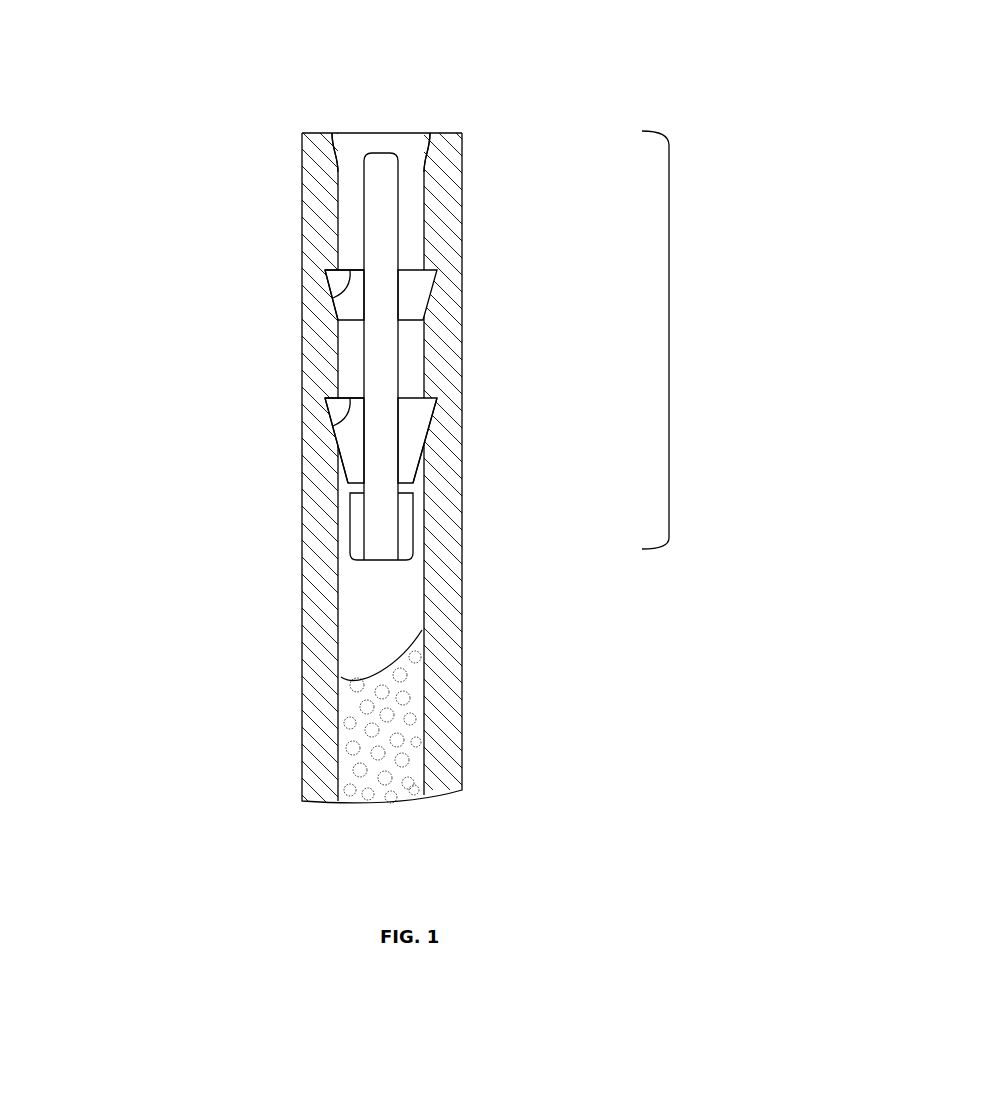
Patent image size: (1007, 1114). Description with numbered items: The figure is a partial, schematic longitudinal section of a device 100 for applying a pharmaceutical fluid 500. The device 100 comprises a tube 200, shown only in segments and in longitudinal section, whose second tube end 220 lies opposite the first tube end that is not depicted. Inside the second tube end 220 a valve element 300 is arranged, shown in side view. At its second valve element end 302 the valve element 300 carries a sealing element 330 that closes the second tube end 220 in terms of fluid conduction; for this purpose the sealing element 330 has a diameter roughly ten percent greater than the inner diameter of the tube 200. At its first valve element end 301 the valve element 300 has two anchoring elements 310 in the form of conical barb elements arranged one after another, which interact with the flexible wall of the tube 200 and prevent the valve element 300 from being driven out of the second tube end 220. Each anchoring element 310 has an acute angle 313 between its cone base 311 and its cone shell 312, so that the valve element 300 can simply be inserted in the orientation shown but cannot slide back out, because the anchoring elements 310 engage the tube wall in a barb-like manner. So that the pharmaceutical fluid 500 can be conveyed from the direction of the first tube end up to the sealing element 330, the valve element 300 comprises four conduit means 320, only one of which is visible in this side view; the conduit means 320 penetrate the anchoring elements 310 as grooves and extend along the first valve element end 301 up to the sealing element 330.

The device 100 is at (533, 122).
The tube 200 is at (302, 582).
The second tube end 220 is at (257, 173).
The valve element 300 is at (669, 342).
The first valve element end 301 is at (410, 478).
The second valve element end 302 is at (417, 180).
The anchoring elements 310 is at (418, 440).
The cone base 311 is at (356, 395).
The cone shell 312 is at (348, 483).
The acute angle 313 is at (335, 411).
The conduit means 320 is at (383, 520).
The sealing element 330 is at (402, 146).
The pharmaceutical fluid 500 is at (388, 733).